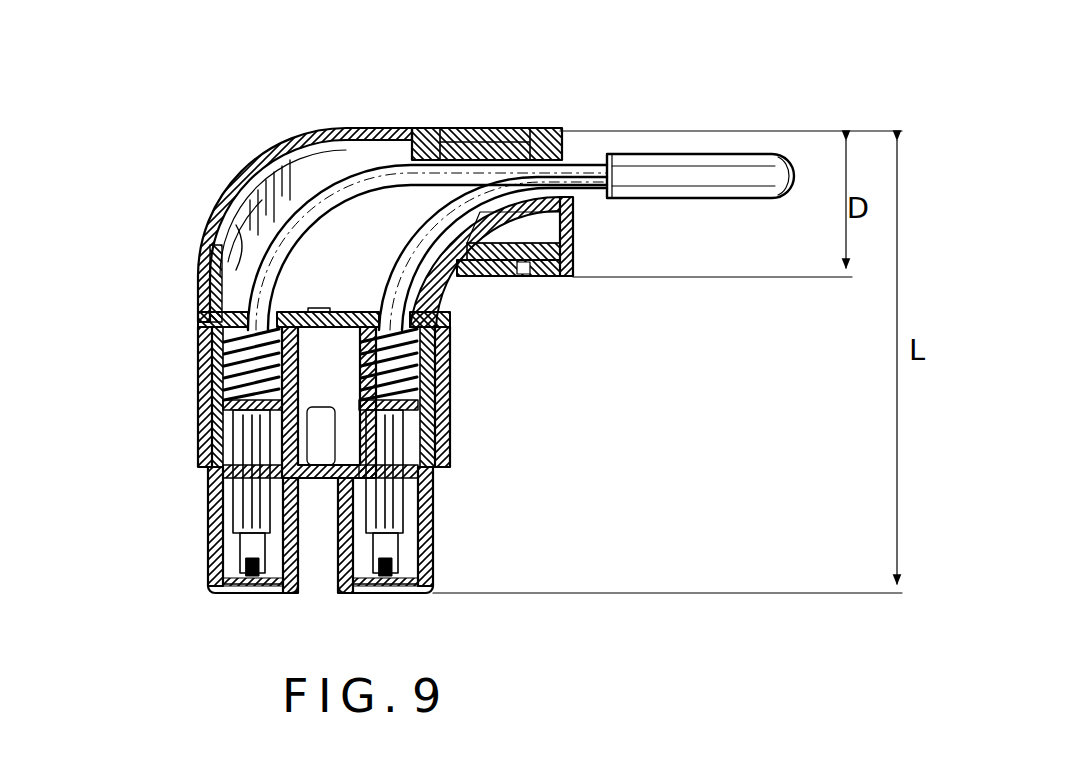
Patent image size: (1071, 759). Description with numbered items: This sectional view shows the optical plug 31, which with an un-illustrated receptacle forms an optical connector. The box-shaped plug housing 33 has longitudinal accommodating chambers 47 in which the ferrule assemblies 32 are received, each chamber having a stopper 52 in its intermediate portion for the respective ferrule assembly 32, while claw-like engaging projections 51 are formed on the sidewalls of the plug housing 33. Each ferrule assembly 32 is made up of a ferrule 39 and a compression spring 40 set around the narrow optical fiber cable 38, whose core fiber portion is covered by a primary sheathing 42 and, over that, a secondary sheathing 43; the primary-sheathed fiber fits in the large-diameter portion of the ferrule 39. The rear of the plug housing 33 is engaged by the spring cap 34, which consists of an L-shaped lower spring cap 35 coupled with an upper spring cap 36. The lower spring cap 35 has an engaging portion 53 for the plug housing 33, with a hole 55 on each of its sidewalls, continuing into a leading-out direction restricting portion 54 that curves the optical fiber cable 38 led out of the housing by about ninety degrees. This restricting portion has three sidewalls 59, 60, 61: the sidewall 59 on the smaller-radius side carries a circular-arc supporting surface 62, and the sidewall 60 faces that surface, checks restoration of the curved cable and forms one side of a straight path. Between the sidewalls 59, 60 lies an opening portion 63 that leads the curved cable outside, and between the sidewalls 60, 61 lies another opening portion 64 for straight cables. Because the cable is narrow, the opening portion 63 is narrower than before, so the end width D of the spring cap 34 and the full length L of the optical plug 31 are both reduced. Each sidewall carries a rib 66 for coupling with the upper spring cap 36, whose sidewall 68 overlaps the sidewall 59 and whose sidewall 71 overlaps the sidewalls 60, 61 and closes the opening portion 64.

The optical plug 31 is at (163, 158).
The ferrule assembly 32 is at (205, 470).
The plug housing 33 is at (207, 556).
The spring cap 34 is at (673, 327).
The lower spring cap 35 is at (573, 214).
The upper spring cap 36 is at (548, 286).
The optical fiber cable 38 is at (752, 160).
The ferrule 39 is at (207, 576).
The compression spring 40 is at (197, 354).
The primary sheathing 42 is at (400, 300).
The secondary sheathing 43 is at (678, 160).
The accommodating chamber 47 is at (237, 592).
The engaging projection 51 is at (200, 437).
The stopper 52 is at (205, 490).
The engaging portion 53 is at (452, 376).
The leading-out direction restricting portion 54 is at (207, 218).
The hole 55 is at (197, 418).
The sidewall 59 is at (575, 214).
The sidewall 60 is at (470, 140).
The sidewall 61 is at (236, 228).
The supporting surface 62 is at (476, 284).
The opening portion 63 is at (570, 165).
The opening portion 64 is at (340, 158).
The rib 66 is at (438, 135).
The sidewall 68 is at (518, 280).
The sidewall 71 is at (262, 152).